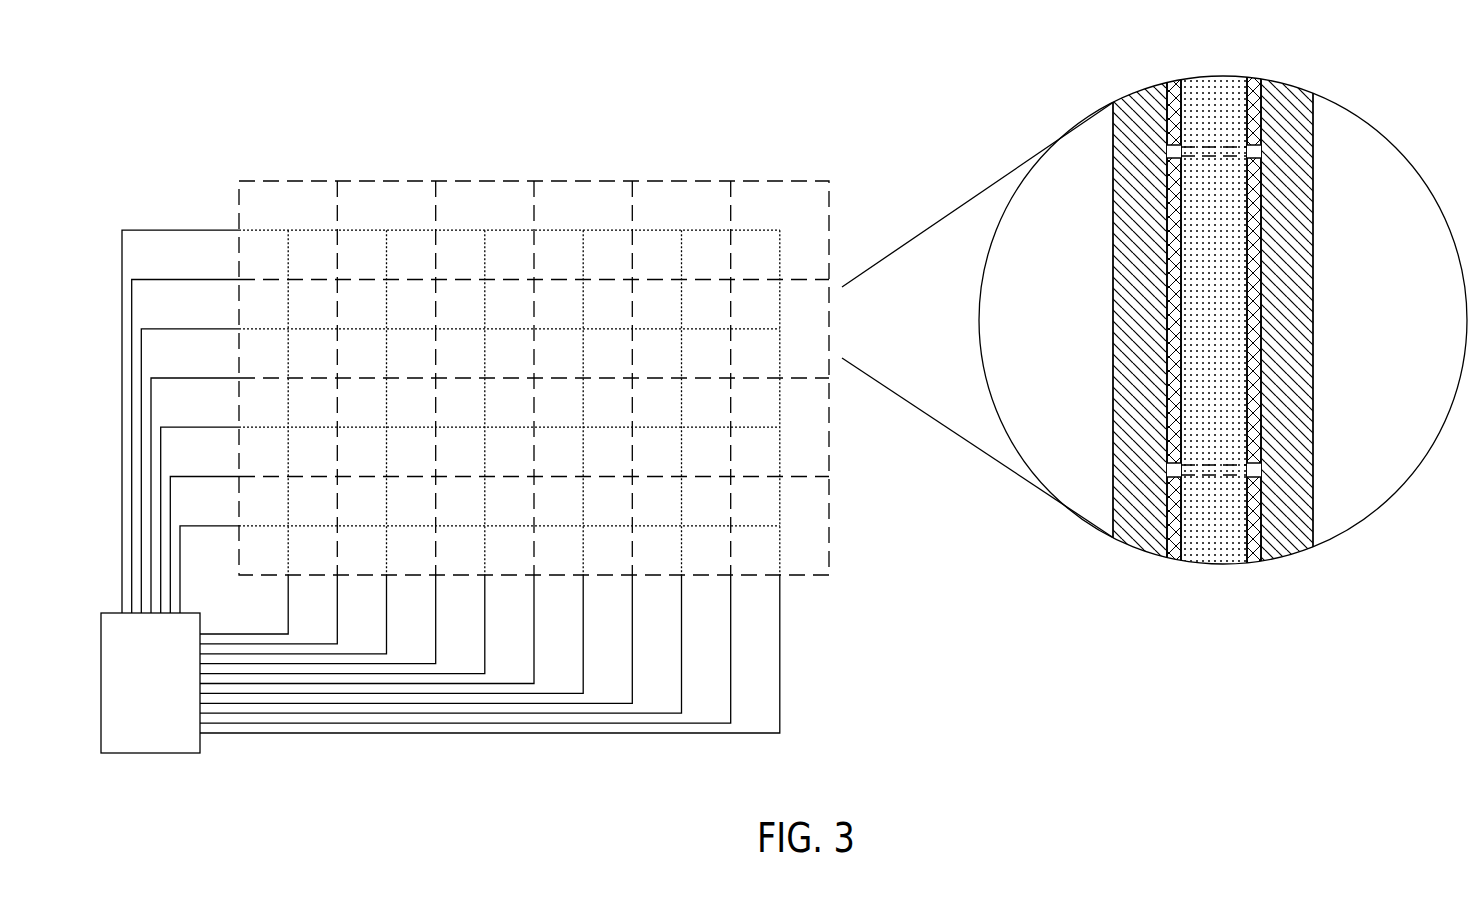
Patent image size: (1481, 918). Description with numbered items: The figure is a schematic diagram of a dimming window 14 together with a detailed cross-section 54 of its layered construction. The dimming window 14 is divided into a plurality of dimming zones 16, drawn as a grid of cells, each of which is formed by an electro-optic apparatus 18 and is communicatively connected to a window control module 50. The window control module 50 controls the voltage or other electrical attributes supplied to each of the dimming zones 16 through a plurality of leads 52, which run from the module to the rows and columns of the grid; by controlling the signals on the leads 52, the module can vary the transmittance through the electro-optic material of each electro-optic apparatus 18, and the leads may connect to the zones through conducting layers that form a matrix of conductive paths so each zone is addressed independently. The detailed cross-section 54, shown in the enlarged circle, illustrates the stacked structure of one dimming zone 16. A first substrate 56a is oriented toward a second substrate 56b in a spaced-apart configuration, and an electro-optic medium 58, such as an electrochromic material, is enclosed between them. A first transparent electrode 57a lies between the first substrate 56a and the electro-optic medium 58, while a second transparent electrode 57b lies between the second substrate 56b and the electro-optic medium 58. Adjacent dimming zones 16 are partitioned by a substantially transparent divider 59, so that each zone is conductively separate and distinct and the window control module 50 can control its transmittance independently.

The dimming window 14 is at (209, 117).
The dimming zones 16 is at (301, 197).
The electro-optic apparatuses 18 is at (469, 198).
The window control module 50 is at (138, 724).
The leads 52 is at (323, 733).
The detailed cross-section 54 is at (977, 128).
The first substrate 56a is at (1130, 250).
The second substrate 56b is at (1293, 270).
The first transparent electrode 57a is at (1172, 308).
The second transparent electrode 57b is at (1257, 320).
The electro-optic medium 58 is at (1212, 330).
The transparent divider 59 is at (1217, 153).